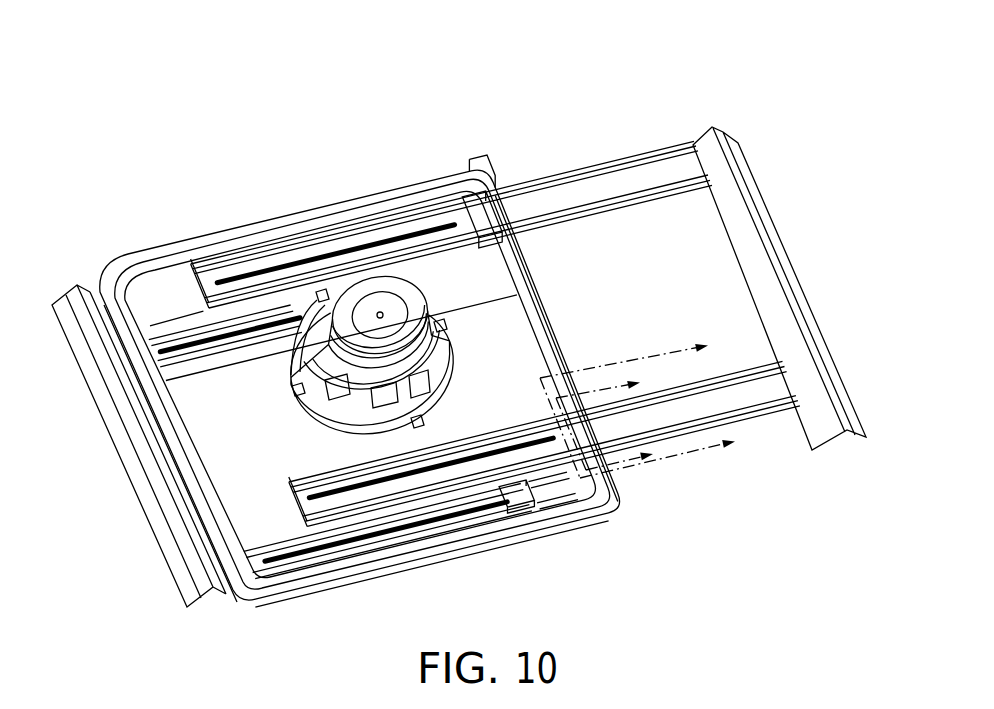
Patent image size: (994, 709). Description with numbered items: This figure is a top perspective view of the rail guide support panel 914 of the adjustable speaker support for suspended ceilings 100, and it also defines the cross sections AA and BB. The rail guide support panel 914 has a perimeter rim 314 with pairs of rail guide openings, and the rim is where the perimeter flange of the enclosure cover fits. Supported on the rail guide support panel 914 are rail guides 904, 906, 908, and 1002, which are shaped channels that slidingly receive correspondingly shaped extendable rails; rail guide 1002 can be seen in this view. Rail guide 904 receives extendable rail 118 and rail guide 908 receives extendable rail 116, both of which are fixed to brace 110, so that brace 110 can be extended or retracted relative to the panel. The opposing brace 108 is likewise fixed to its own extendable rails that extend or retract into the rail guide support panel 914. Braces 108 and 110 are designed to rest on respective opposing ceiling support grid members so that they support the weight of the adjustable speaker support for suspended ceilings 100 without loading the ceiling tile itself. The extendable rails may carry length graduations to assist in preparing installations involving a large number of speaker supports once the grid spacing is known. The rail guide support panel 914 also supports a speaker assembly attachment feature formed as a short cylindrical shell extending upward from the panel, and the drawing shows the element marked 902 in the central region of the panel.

The adjustable speaker support for suspended ceilings 100 is at (160, 54).
The brace 108 is at (177, 533).
The brace 110 is at (793, 292).
The extendable rail 116 is at (753, 410).
The extendable rail 118 is at (665, 172).
The perimeter rim 314 is at (163, 242).
The motor 902 is at (417, 327).
The rail guide 904 is at (272, 240).
The rail guide 906 is at (183, 313).
The rail guide 908 is at (327, 465).
The rail guide support panel 914 is at (557, 477).
The rail guide 1002 is at (503, 502).